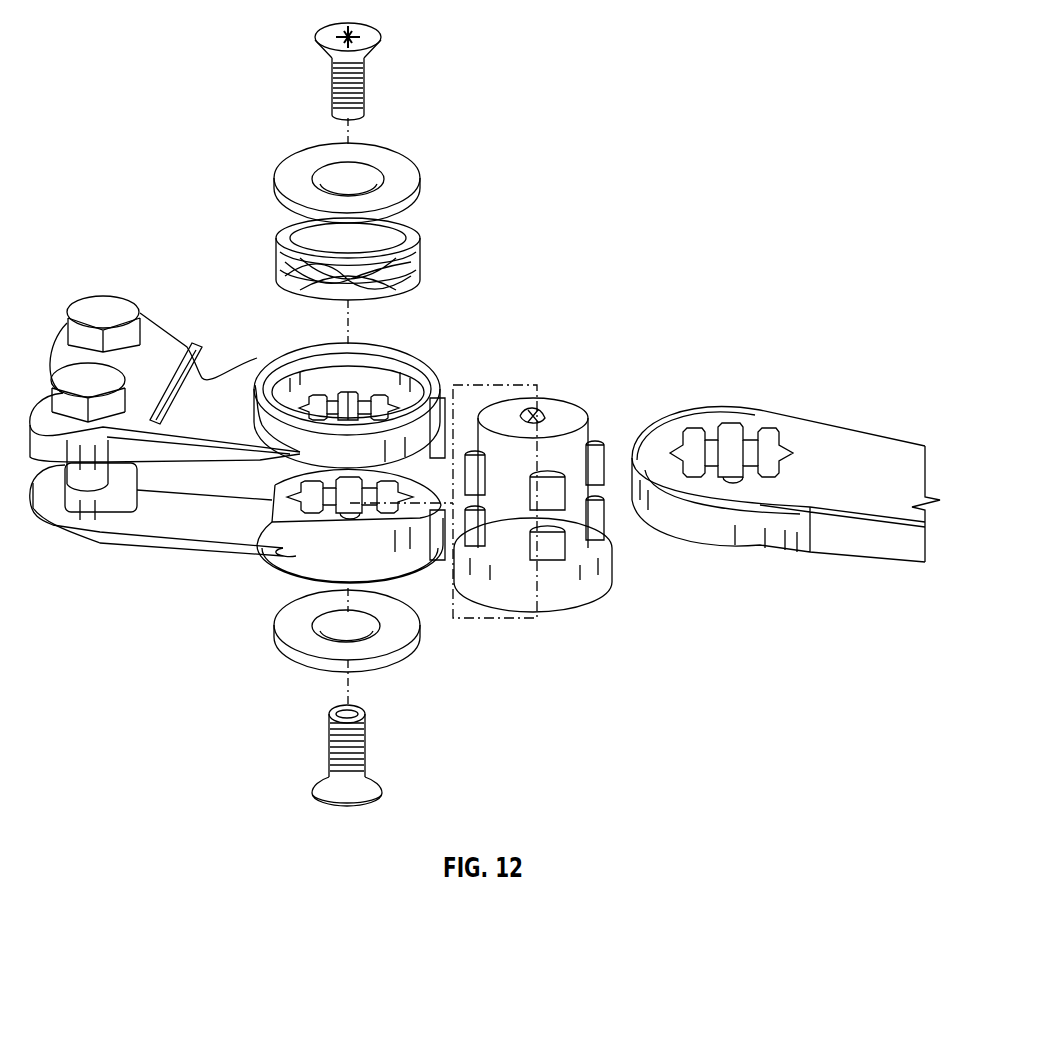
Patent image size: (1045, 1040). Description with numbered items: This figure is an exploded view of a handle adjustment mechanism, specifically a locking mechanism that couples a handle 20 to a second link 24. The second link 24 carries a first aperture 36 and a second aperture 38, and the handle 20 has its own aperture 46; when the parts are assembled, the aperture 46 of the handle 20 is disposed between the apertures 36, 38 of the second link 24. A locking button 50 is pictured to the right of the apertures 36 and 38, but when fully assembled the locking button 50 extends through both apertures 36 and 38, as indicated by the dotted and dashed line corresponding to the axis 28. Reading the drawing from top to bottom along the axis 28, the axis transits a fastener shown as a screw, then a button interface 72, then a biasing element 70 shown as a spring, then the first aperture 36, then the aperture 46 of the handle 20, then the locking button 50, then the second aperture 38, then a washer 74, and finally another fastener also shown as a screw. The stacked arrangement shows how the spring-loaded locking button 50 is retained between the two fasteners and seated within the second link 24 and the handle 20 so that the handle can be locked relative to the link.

The handle 20 is at (786, 498).
The second link 24 is at (237, 451).
The axis 28 is at (345, 695).
The first aperture 36 is at (303, 374).
The second aperture 38 is at (322, 520).
The aperture 46 is at (745, 474).
The locking button 50 is at (598, 588).
The biasing element 70 is at (418, 236).
The button interface 72 is at (420, 162).
The washer 74 is at (410, 646).